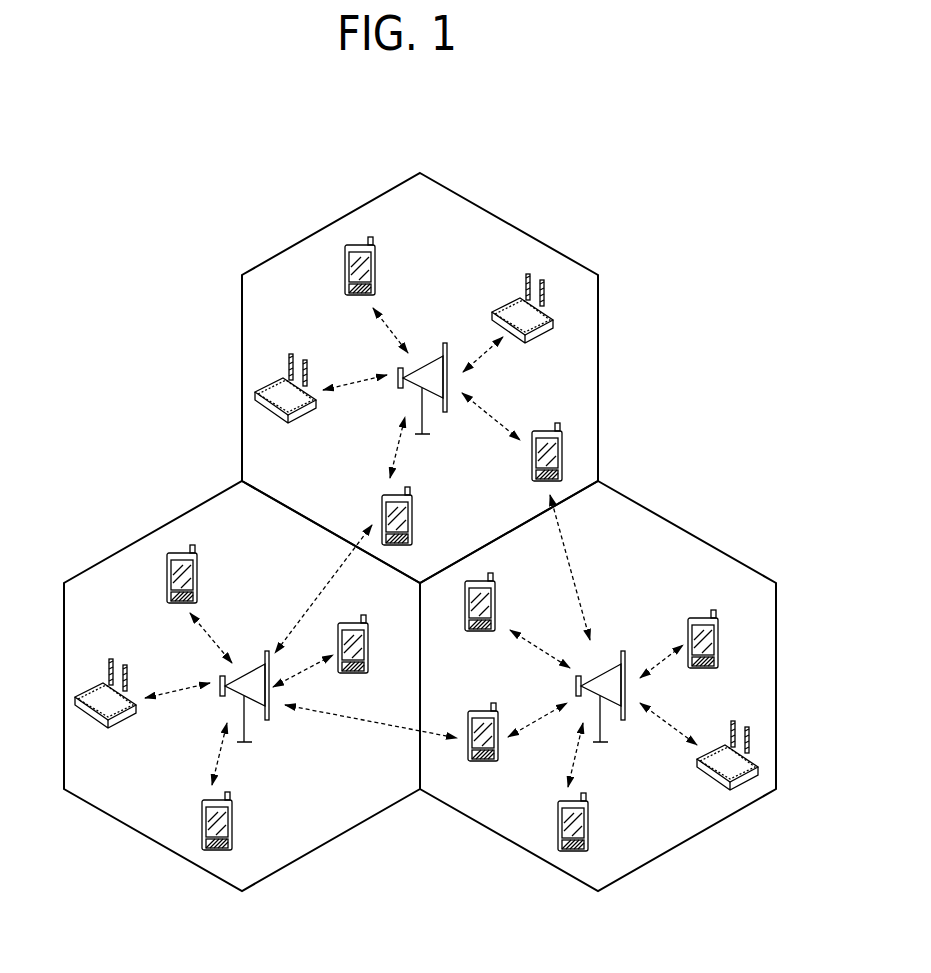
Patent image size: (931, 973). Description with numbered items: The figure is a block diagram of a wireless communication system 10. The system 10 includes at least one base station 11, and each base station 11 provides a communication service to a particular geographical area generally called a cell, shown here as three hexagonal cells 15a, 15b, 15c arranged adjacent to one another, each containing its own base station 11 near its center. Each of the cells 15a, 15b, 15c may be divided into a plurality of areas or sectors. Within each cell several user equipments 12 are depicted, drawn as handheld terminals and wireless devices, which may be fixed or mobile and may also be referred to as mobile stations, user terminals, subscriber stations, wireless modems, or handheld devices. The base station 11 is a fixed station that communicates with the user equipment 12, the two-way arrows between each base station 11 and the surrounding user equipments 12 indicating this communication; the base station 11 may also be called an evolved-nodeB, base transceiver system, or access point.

The wireless communication system 10 is at (420, 532).
The base station 11 is at (433, 355).
The user equipment 12 is at (376, 268).
The cell 15a is at (600, 372).
The cell 15b is at (712, 545).
The cell 15c is at (127, 545).